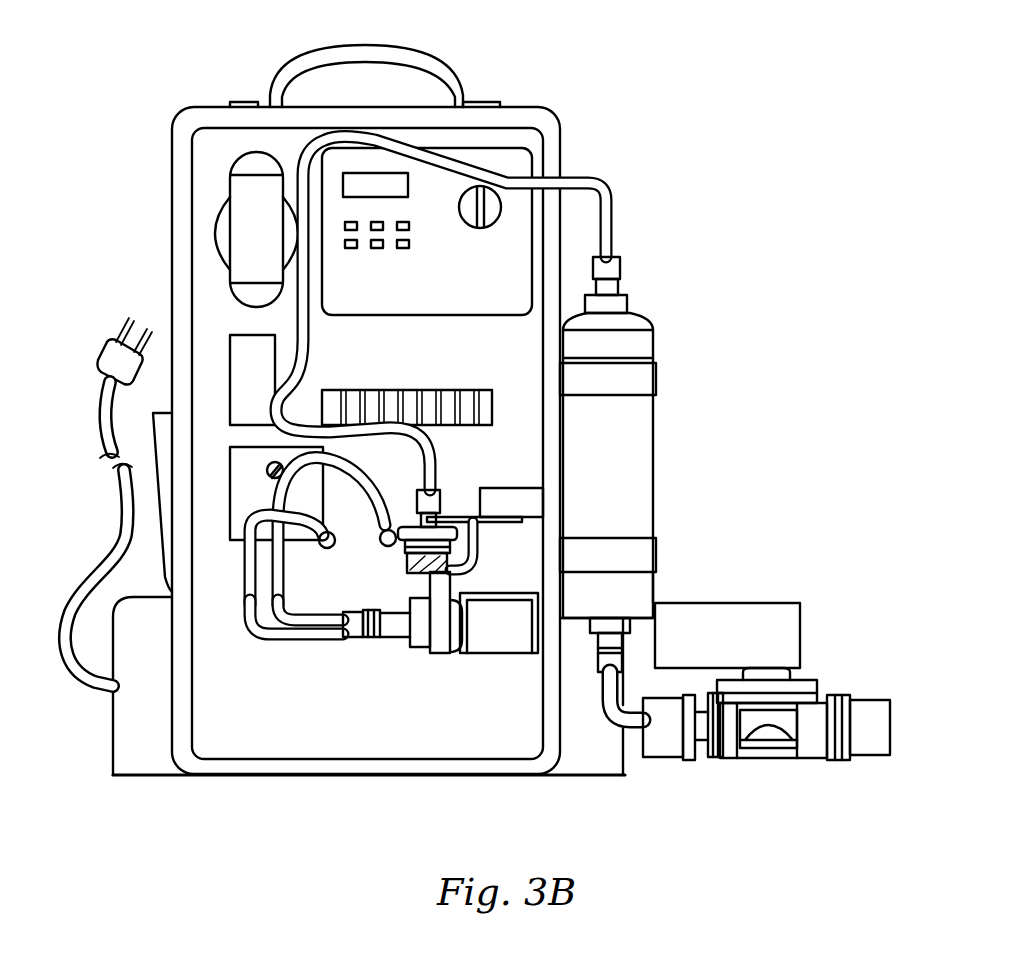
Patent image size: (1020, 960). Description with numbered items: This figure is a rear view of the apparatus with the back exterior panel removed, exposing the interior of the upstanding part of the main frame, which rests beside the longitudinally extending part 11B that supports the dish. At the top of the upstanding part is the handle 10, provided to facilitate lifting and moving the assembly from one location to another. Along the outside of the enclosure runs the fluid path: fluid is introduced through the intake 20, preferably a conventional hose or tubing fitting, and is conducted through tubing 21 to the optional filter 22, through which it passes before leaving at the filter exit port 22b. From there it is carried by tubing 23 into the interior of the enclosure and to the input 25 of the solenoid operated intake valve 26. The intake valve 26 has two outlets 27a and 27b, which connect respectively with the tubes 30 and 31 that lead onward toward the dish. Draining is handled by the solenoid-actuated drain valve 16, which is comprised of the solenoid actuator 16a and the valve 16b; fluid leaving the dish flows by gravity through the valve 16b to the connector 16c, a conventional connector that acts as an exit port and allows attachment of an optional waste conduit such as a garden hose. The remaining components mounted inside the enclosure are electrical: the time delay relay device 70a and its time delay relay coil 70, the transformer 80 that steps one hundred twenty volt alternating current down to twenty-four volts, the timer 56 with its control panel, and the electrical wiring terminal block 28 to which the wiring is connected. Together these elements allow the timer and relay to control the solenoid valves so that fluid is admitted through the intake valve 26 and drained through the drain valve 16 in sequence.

The handle 10 is at (428, 67).
The longitudinally extending part of main frame 11B is at (146, 757).
The solenoid-actuated drain valve 16 is at (780, 686).
The solenoid actuator 16a is at (705, 622).
The valve 16b is at (762, 752).
The connector 16c is at (862, 712).
The intake 20 is at (716, 750).
The tubing 21 is at (628, 722).
The filter 22 is at (622, 470).
The filter exit port 22b is at (632, 305).
The tubing 23 is at (623, 228).
The input 25 is at (442, 500).
The solenoid operated intake valve 26 is at (420, 568).
The outlet 27a is at (352, 624).
The outlet 27b is at (332, 640).
The electrical wiring terminal block 28 is at (428, 402).
The tube 30 is at (387, 530).
The tube 31 is at (252, 585).
The timer 56 is at (407, 288).
The time delay relay coil 70 is at (244, 360).
The time delay relay device 70a is at (252, 498).
The 120 to 24 volt a-c transformer 80 is at (242, 194).